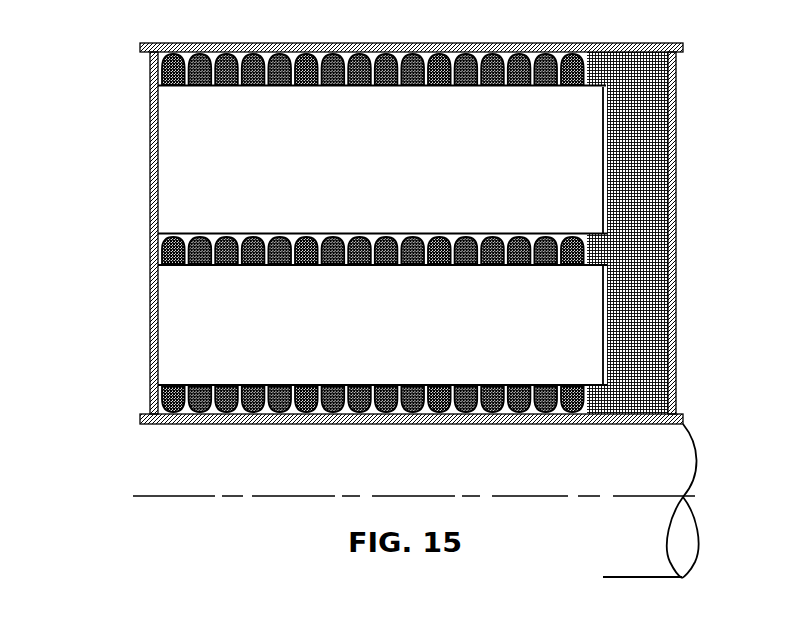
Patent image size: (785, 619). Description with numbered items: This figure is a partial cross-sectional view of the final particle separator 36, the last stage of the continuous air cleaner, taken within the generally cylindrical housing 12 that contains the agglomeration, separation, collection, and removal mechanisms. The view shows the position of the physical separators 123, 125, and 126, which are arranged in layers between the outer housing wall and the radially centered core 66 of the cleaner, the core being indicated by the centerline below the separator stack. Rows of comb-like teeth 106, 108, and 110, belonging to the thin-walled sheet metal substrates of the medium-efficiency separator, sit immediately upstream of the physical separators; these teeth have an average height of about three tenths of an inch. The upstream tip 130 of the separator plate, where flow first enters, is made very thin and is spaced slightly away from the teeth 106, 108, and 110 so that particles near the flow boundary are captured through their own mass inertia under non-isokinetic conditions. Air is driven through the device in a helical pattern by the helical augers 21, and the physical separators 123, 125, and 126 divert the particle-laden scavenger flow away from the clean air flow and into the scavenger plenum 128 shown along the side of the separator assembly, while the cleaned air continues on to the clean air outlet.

The housing 12 is at (227, 42).
The final particle separator 36 is at (638, 42).
The physical separator 123 is at (560, 85).
The helical auger 21 is at (152, 178).
The scavenger plenum 128 is at (633, 263).
The core 66 is at (673, 415).
The upstream tip 130 is at (155, 88).
The teeth 106 is at (157, 84).
The teeth 108 is at (186, 233).
The physical separator 125 is at (196, 264).
The physical separator 126 is at (200, 385).
The teeth 110 is at (175, 385).